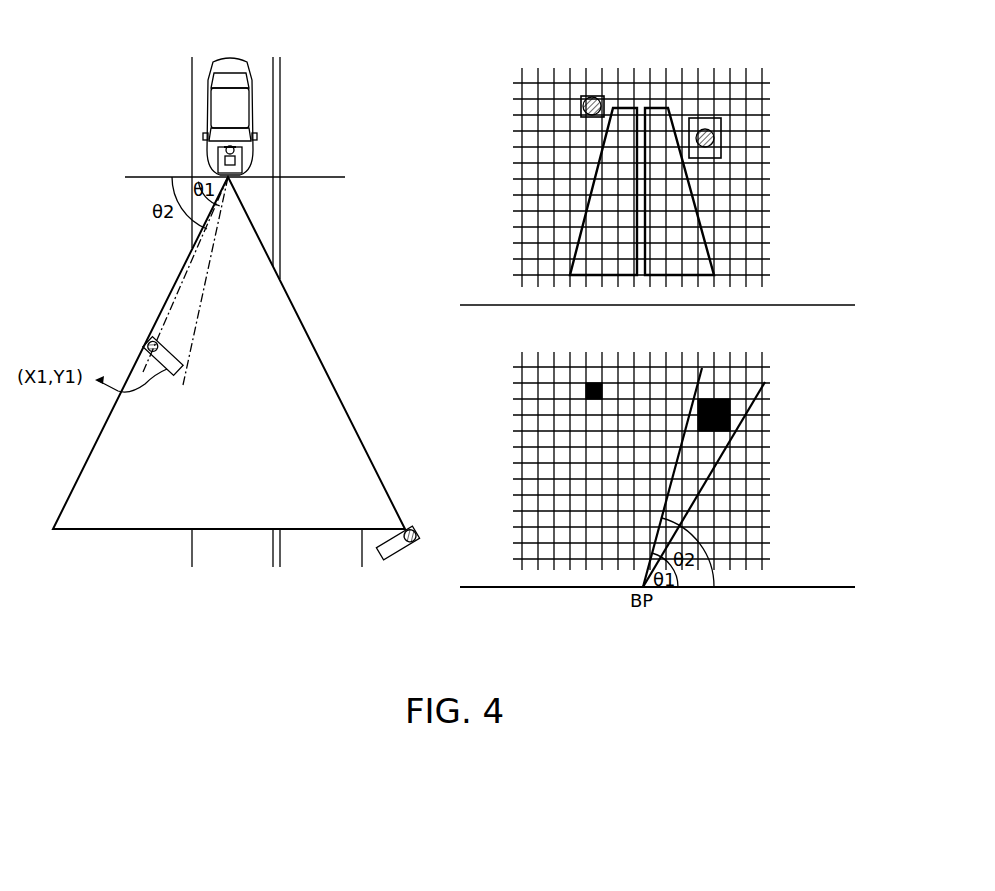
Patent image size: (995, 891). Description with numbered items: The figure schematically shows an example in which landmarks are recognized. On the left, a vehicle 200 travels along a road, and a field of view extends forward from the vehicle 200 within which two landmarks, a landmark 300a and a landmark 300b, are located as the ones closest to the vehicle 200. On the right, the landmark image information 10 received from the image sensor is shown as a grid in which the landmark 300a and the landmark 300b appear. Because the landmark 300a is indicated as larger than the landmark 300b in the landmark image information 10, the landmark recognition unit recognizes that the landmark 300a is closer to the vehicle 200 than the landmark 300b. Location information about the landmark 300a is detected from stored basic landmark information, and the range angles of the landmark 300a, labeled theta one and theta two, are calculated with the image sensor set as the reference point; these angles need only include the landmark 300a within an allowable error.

The vehicle 200 is at (238, 57).
The landmark 300a is at (178, 356).
The landmark 300b is at (410, 530).
The landmark image information 10 is at (553, 73).